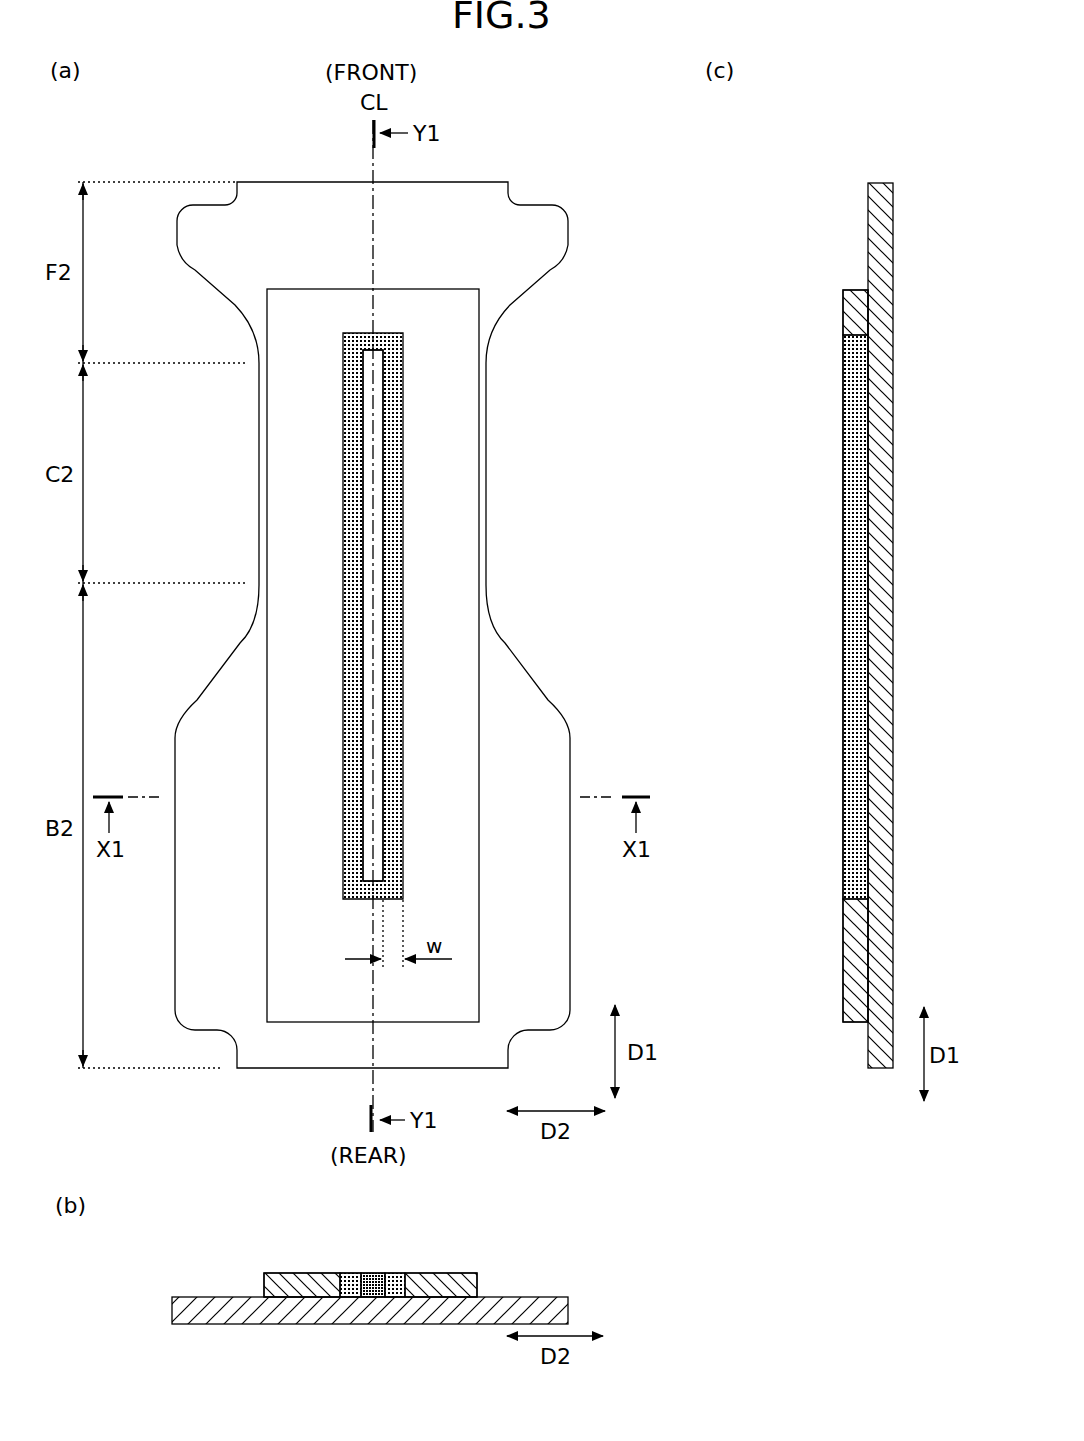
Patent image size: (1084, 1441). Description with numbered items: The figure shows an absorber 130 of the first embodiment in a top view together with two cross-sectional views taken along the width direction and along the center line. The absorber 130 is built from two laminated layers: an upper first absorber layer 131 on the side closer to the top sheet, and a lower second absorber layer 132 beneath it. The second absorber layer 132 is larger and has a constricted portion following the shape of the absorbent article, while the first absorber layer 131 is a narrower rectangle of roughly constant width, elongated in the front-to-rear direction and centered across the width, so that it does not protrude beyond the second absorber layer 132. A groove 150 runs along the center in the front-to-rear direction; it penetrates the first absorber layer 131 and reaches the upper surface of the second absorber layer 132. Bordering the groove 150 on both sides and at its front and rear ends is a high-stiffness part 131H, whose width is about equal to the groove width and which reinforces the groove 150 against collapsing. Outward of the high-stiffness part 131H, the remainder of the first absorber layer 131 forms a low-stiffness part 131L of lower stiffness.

The absorber 130 is at (529, 139).
The first absorber layer 131 is at (598, 316).
The low-stiffness part 131L is at (465, 333).
The high-stiffness part 131H is at (395, 387).
The second absorber layer 132 is at (551, 223).
The groove 150 is at (380, 588).